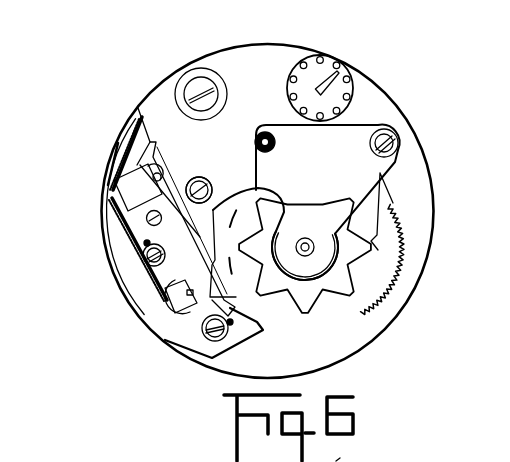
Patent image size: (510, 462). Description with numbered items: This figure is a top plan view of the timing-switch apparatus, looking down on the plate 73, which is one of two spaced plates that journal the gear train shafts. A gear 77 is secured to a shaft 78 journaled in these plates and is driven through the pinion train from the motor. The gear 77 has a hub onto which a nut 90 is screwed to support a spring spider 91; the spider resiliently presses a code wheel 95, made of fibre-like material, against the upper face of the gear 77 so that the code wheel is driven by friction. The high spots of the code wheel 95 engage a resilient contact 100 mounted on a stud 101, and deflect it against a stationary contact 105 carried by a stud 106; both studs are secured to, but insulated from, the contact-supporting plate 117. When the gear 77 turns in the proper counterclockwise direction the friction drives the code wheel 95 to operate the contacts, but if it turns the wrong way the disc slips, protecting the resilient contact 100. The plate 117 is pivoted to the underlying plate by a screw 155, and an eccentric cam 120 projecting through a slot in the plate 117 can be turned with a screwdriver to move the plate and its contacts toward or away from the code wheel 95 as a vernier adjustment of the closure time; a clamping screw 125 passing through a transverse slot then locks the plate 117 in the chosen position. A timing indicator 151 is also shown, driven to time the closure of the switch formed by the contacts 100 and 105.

The plate 73 is at (335, 148).
The gear 77 is at (405, 246).
The shaft 78 is at (337, 461).
The nut 90 is at (320, 264).
The spring spider 91 is at (307, 288).
The code wheel 95 is at (272, 328).
The resilient contact 100 is at (199, 177).
The stud 101 is at (133, 187).
The stationary contact 105 is at (175, 314).
The stud 106 is at (176, 298).
The contact-supporting plate 117 is at (155, 142).
The eccentric stud or cam 120 is at (150, 265).
The clamping screw 125 is at (213, 330).
The timing indicator 151 is at (340, 75).
The screw 155 is at (117, 232).